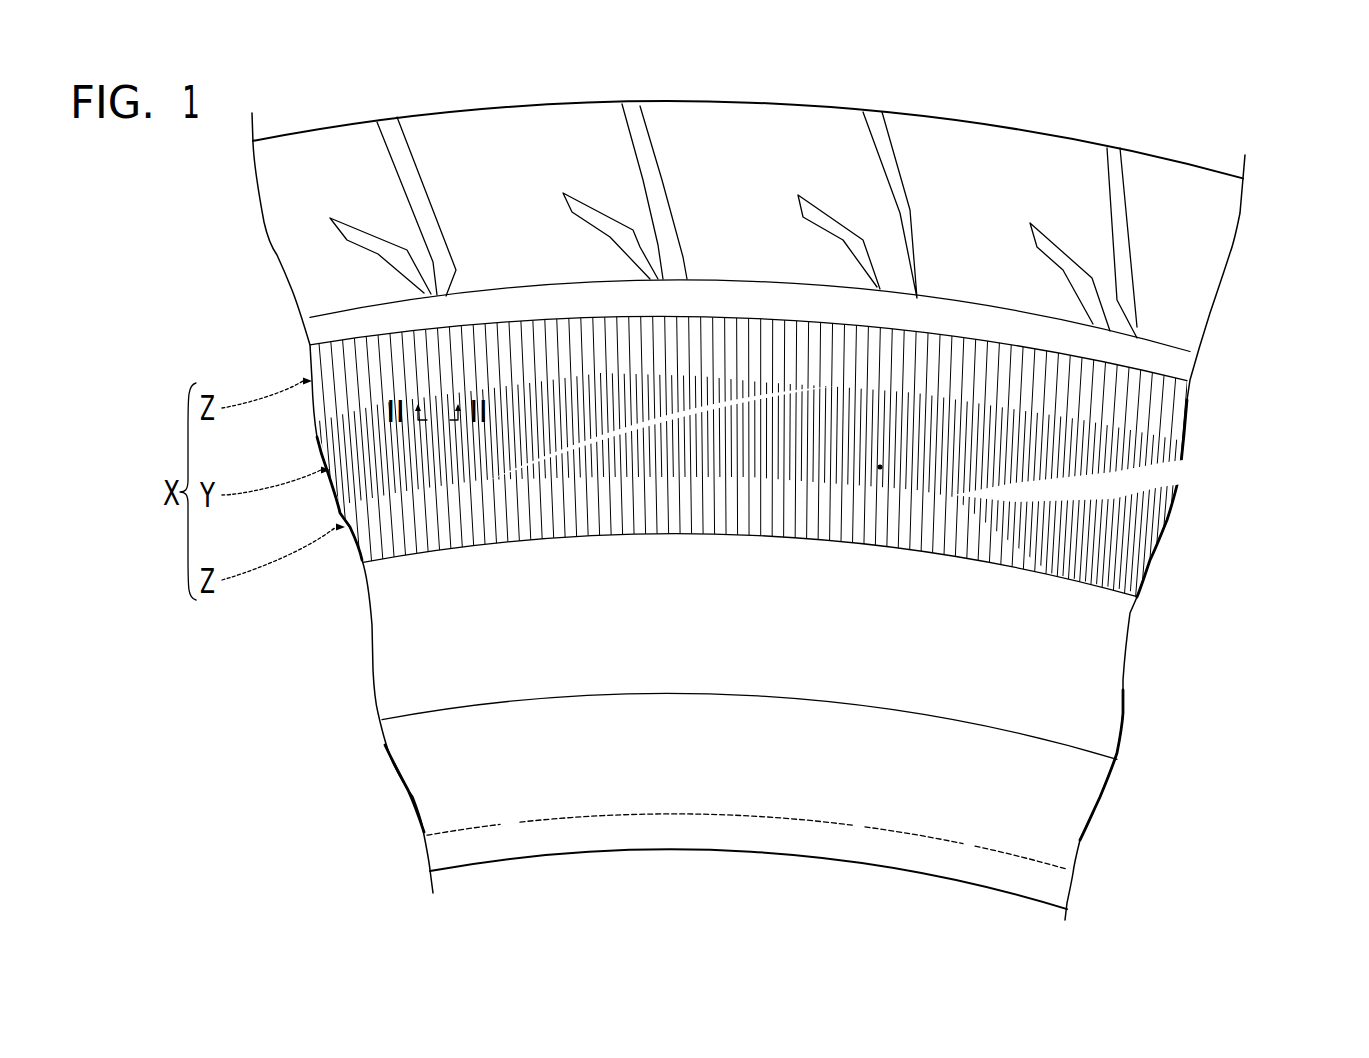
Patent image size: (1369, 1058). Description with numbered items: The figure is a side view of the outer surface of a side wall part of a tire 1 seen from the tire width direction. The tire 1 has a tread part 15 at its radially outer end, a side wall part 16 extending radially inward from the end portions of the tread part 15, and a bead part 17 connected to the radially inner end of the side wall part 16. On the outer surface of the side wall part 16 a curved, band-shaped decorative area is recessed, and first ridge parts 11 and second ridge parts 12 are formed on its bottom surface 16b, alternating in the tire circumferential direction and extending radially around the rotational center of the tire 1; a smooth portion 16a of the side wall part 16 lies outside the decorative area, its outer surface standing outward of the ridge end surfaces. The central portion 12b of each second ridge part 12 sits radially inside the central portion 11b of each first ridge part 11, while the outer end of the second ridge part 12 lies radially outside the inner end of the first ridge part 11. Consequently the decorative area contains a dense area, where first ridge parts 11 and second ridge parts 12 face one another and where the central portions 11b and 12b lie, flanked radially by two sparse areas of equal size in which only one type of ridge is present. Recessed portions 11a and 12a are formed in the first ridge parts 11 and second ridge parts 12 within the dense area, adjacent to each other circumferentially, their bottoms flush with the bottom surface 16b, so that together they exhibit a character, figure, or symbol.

The tire 1 is at (1222, 118).
The first ridge part 11 is at (404, 342).
The recessed portion 11a is at (1145, 487).
The central portion 11b is at (878, 406).
The second ridge part 12 is at (433, 385).
The recessed portion 12a is at (1139, 430).
The central portion 12b is at (880, 466).
The tread part 15 is at (776, 100).
The side wall part 16 is at (795, 319).
The smooth portion 16a is at (318, 330).
The bottom surface 16b is at (1135, 567).
The bead part 17 is at (705, 835).